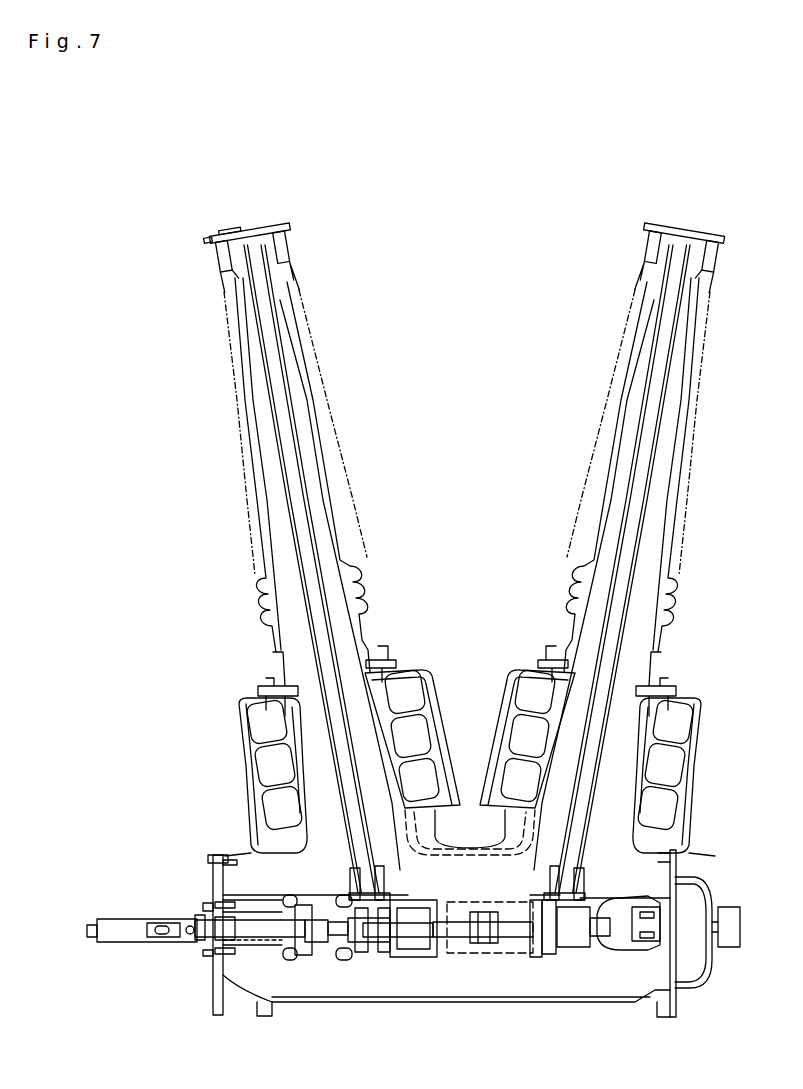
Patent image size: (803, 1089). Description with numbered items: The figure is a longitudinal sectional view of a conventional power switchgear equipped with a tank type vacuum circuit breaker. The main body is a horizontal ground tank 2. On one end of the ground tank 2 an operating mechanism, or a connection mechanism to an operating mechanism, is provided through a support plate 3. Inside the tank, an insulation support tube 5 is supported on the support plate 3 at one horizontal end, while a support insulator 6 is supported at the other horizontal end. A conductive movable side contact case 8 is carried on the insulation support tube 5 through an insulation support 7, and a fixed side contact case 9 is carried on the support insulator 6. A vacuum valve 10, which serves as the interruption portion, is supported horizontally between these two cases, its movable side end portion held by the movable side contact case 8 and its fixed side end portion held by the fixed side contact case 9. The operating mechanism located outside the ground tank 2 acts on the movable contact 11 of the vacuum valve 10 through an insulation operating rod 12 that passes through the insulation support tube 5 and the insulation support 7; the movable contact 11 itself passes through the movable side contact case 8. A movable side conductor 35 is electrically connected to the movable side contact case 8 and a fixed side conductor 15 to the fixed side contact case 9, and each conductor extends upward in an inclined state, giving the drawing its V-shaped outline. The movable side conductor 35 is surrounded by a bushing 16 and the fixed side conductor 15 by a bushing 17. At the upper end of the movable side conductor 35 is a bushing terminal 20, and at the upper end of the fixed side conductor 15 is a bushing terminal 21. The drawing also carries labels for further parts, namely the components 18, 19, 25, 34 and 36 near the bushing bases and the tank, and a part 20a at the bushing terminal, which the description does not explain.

The ground tank 2 is at (545, 988).
The support plate 3 is at (214, 882).
The insulation support tube 5 is at (255, 897).
The support insulator 6 is at (643, 893).
The insulation support 7 is at (327, 945).
The movable side contact case 8 is at (377, 950).
The fixed side contact case 9 is at (575, 945).
The vacuum valve 10 is at (490, 945).
The movable contact 11 is at (456, 935).
The insulation operating rod 12 is at (268, 943).
The fixed side conductor 15 is at (628, 455).
The bushing 16 is at (233, 391).
The bushing 17 is at (613, 372).
The left shield housing 18 is at (420, 669).
The right shield housing 19 is at (520, 669).
The bushing terminal 20 is at (292, 229).
The terminal plate 20a is at (237, 234).
The bushing terminal 21 is at (641, 226).
The insulating spacer 25 is at (415, 917).
The operating handle rod 34 is at (142, 942).
The movable side conductor 35 is at (278, 451).
The terminal 36 is at (225, 235).